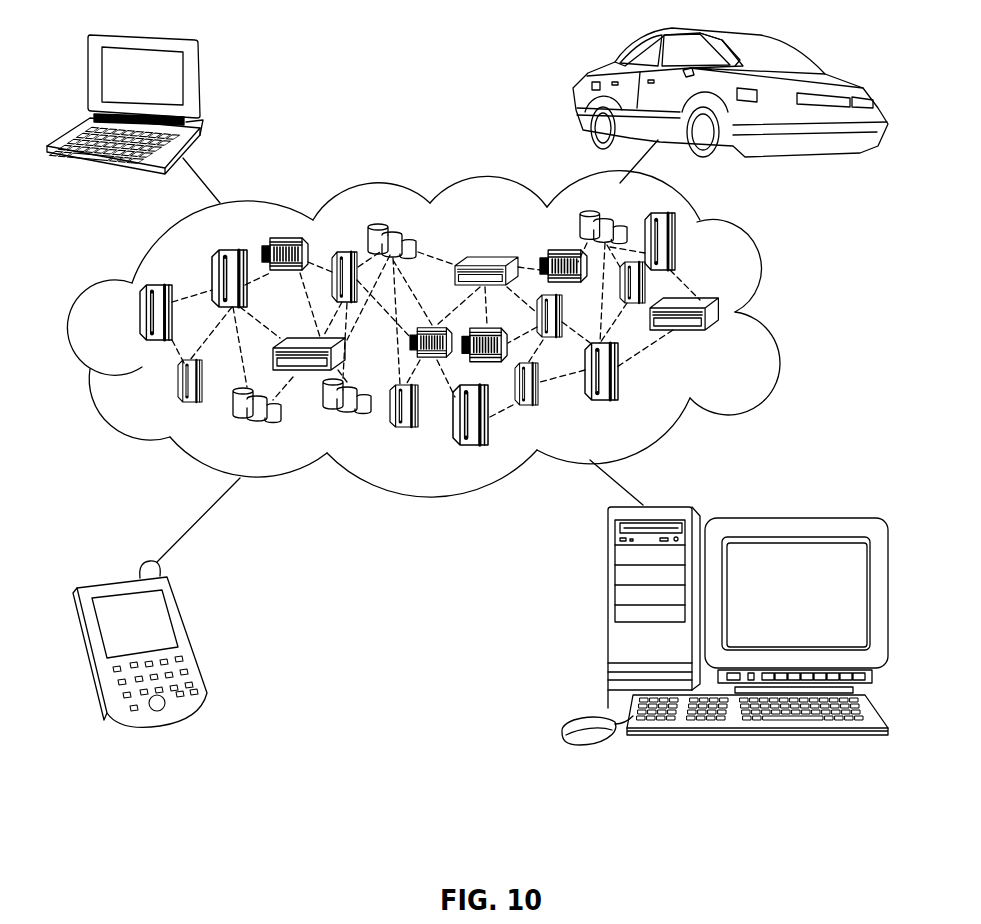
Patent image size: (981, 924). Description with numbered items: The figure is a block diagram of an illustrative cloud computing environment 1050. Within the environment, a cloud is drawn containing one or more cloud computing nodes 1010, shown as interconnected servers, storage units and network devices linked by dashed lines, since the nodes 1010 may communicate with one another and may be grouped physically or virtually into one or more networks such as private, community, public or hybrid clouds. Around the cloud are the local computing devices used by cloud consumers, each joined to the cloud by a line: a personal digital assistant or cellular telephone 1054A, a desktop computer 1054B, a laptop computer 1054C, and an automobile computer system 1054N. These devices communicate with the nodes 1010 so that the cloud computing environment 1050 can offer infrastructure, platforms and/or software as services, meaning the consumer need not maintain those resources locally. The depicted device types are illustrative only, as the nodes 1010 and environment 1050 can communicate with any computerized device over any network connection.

The cloud computing nodes 1010 is at (738, 335).
The cloud computing environment 1050 is at (762, 273).
The personal digital assistant or cellular telephone 1054A is at (188, 635).
The desktop computer 1054B is at (608, 615).
The laptop computer 1054C is at (200, 80).
The automobile computer system 1054N is at (583, 87).